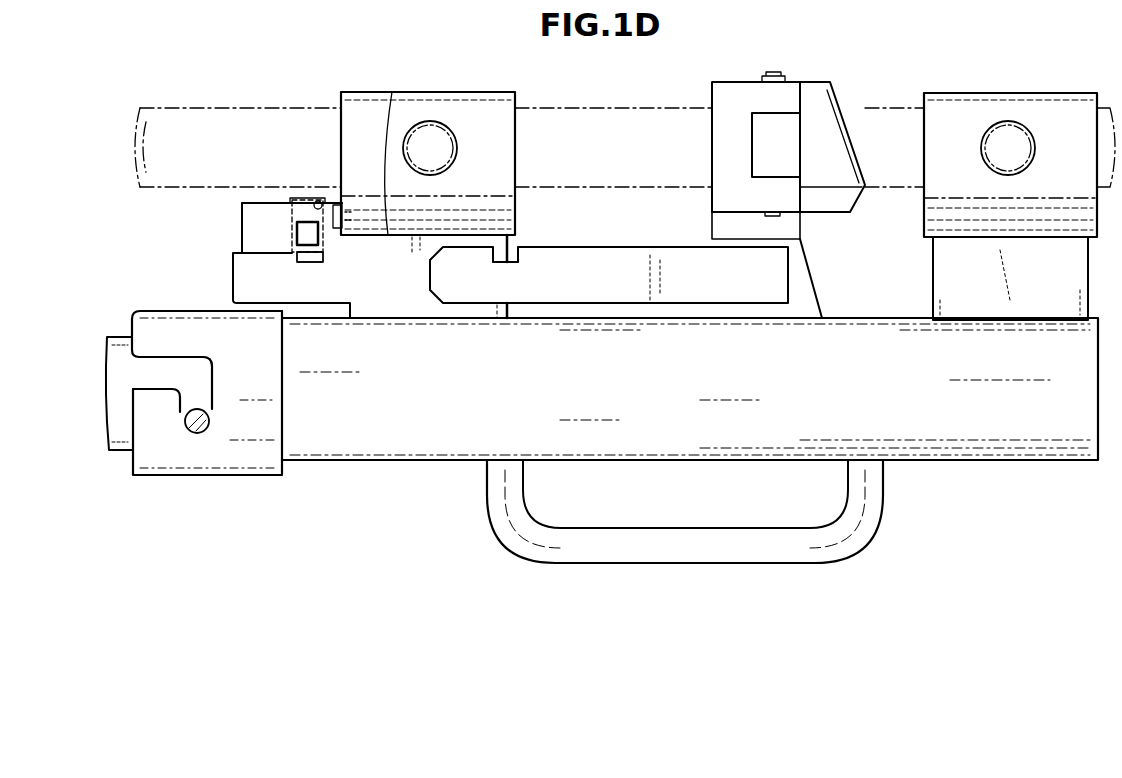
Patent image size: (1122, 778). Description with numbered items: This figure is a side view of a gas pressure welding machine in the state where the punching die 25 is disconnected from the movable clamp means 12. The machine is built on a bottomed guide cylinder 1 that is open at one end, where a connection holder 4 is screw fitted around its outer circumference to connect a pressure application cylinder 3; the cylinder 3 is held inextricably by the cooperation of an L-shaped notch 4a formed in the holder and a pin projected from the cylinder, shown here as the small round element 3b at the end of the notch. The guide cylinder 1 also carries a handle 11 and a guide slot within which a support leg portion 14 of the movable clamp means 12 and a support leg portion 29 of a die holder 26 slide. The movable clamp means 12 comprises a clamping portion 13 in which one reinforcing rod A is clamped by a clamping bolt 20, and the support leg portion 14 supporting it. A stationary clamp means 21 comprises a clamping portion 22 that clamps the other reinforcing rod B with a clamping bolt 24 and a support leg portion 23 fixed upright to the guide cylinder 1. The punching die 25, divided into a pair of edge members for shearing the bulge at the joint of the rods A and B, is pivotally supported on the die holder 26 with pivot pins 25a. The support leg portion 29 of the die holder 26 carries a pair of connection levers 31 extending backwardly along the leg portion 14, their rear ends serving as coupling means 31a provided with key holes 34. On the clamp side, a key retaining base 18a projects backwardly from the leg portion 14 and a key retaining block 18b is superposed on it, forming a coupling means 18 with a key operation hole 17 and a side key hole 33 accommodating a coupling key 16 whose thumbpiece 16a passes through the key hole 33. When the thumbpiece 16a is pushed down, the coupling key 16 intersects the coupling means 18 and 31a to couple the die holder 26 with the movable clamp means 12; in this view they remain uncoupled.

The guide cylinder 1 is at (432, 445).
The pressure application cylinder 3 is at (123, 450).
The pin 3b is at (200, 435).
The connection holder 4 is at (180, 463).
The L-shaped notch 4a is at (150, 372).
The handle 11 is at (682, 550).
The movable clamp means 12 is at (417, 92).
The clamping portion 13 is at (357, 102).
The support leg portion 14 is at (392, 92).
The coupling key 16 is at (302, 200).
The thumbpiece 16a is at (297, 243).
The key operation hole 17 is at (318, 200).
The coupling means 18 is at (252, 232).
The key retaining base 18a is at (245, 286).
The key retaining block 18b is at (245, 212).
The clamping bolt 20 is at (455, 130).
The stationary clamp means 21 is at (1035, 94).
The clamping portion 22 is at (943, 96).
The support leg portion 23 is at (935, 289).
The clamping bolt 24 is at (1008, 122).
The punching die 25 is at (840, 102).
The pivot pin 25a is at (772, 76).
The die holder 26 is at (727, 92).
The support leg portion 29 is at (806, 271).
The connection lever 31 is at (606, 262).
The coupling means 31a is at (468, 262).
The key hole 33 is at (292, 258).
The key hole 34 is at (513, 250).
The reinforcing rod A is at (253, 108).
The reinforcing rod B is at (903, 108).